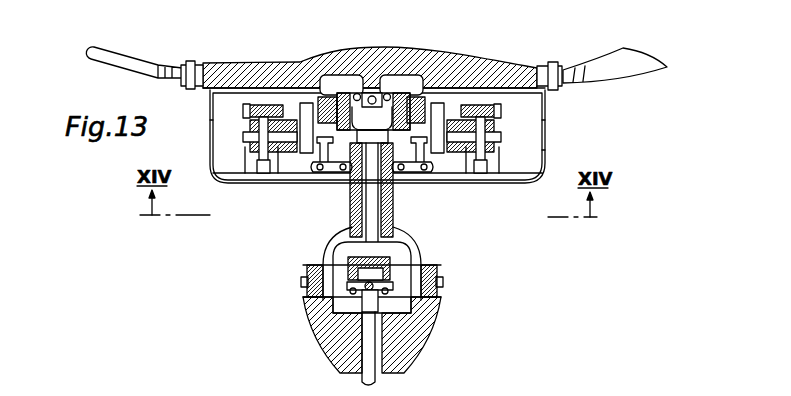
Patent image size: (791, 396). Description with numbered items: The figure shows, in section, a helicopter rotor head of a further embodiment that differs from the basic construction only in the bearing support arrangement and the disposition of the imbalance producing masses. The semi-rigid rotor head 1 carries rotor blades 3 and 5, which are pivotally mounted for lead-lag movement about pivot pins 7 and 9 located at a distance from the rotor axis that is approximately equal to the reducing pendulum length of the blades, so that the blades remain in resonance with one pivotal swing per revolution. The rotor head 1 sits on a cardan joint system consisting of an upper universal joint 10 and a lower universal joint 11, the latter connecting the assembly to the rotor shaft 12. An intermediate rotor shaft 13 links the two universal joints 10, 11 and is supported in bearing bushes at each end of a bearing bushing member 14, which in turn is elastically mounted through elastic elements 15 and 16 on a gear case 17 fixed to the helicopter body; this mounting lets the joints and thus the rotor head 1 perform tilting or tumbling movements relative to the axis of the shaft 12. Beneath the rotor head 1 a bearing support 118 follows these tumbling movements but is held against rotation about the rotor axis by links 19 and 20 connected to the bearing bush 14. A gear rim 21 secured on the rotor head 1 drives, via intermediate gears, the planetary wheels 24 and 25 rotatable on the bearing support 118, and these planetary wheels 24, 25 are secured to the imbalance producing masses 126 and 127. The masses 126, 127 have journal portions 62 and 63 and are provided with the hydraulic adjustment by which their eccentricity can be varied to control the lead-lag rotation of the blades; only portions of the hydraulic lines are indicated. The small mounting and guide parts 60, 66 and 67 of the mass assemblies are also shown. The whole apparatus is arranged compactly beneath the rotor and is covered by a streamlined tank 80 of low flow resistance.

The rotor head 1 is at (520, 68).
The rotor blade 3 is at (660, 68).
The rotor blade 5 is at (100, 54).
The pivot pin 7 is at (553, 87).
The pivot pin 9 is at (190, 68).
The upper universal joint 10 is at (398, 78).
The lower universal joint 11 is at (385, 290).
The rotor shaft 12 is at (370, 352).
The intermediate rotor shaft 13 is at (370, 222).
The bearing bushing member 14 is at (402, 230).
The elastic element 15 is at (310, 282).
The elastic element 16 is at (438, 284).
The gear case 17 is at (337, 348).
The link 19 is at (318, 170).
The link 20 is at (405, 190).
The gear rim 21 is at (445, 97).
The planetary wheel 24 is at (245, 112).
The planetary wheel 25 is at (500, 118).
The bracket 60 is at (262, 175).
The journal portion 62 is at (243, 126).
The journal portion 63 is at (245, 160).
The link 66 is at (243, 183).
The foot 67 is at (282, 170).
The streamlined tank 80 is at (537, 180).
The bearing support 118 is at (330, 97).
The imbalance producing mass 126 is at (247, 143).
The imbalance producing mass 127 is at (522, 160).